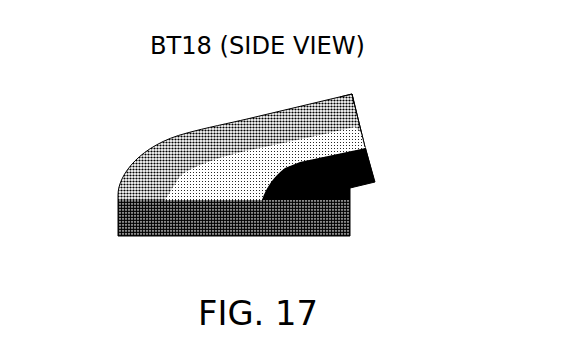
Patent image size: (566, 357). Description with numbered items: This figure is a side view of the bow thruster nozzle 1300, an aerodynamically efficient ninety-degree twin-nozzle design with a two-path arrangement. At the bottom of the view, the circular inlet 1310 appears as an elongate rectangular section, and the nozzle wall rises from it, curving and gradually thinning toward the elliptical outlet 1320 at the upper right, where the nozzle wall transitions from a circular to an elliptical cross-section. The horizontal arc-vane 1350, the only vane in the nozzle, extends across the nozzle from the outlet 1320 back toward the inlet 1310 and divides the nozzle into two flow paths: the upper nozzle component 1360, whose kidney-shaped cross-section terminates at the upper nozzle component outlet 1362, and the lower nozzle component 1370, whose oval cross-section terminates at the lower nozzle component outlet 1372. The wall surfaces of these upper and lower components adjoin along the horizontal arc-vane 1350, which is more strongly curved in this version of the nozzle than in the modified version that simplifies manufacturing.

The nozzle 1300 is at (157, 128).
The circular inlet 1310 is at (313, 238).
The elliptical outlet 1320 is at (360, 107).
The horizontal arc-vane 1350 is at (360, 140).
The upper nozzle component 1360 is at (448, 106).
The upper nozzle component outlet 1362 is at (362, 118).
The lower nozzle component 1370 is at (405, 174).
The lower nozzle component outlet 1372 is at (373, 163).